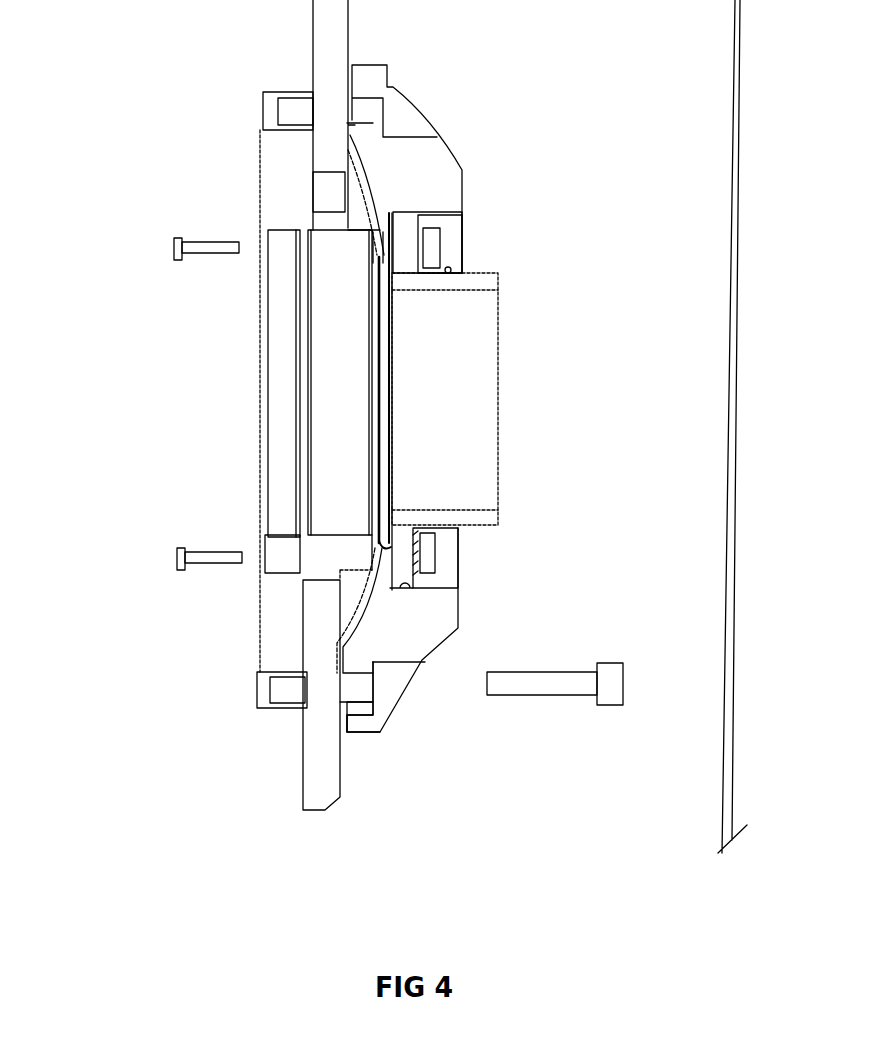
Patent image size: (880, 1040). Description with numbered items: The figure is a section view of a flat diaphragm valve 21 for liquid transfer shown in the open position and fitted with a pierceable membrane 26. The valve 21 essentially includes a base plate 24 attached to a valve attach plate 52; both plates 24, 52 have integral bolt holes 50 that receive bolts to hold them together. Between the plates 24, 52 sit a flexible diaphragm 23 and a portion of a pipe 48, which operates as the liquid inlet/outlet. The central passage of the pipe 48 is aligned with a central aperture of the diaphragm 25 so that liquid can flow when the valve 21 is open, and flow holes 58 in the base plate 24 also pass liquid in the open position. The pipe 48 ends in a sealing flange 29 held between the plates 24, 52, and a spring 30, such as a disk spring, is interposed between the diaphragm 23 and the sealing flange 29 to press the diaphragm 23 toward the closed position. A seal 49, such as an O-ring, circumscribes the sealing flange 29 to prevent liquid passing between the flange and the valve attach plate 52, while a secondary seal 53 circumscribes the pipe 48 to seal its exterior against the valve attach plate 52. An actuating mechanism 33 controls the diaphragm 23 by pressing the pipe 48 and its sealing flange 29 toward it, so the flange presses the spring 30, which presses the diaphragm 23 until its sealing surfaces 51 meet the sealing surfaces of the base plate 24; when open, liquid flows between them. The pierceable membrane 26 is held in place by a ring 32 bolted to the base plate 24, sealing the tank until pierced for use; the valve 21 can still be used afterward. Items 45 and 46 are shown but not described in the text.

The valve 21 is at (728, 345).
The flexible diaphragm 23 is at (370, 200).
The base plate 24 is at (330, 763).
The central aperture of the diaphragm 25 is at (387, 373).
The pierceable membrane 26 is at (300, 443).
The sealing flange 29 is at (400, 527).
The spring 30 is at (390, 260).
The ring 32 is at (273, 253).
The actuating mechanism 33 is at (440, 247).
The screw 45 is at (177, 555).
The lower flange 46 is at (357, 592).
The pipe 48 is at (443, 282).
The seal 49 is at (418, 213).
The bolt holes 50 is at (377, 685).
The sealing surfaces of the diaphragm 51 is at (370, 563).
The valve attach plate 52 is at (420, 157).
The secondary seal 53 is at (448, 530).
The flow holes 58 is at (317, 203).